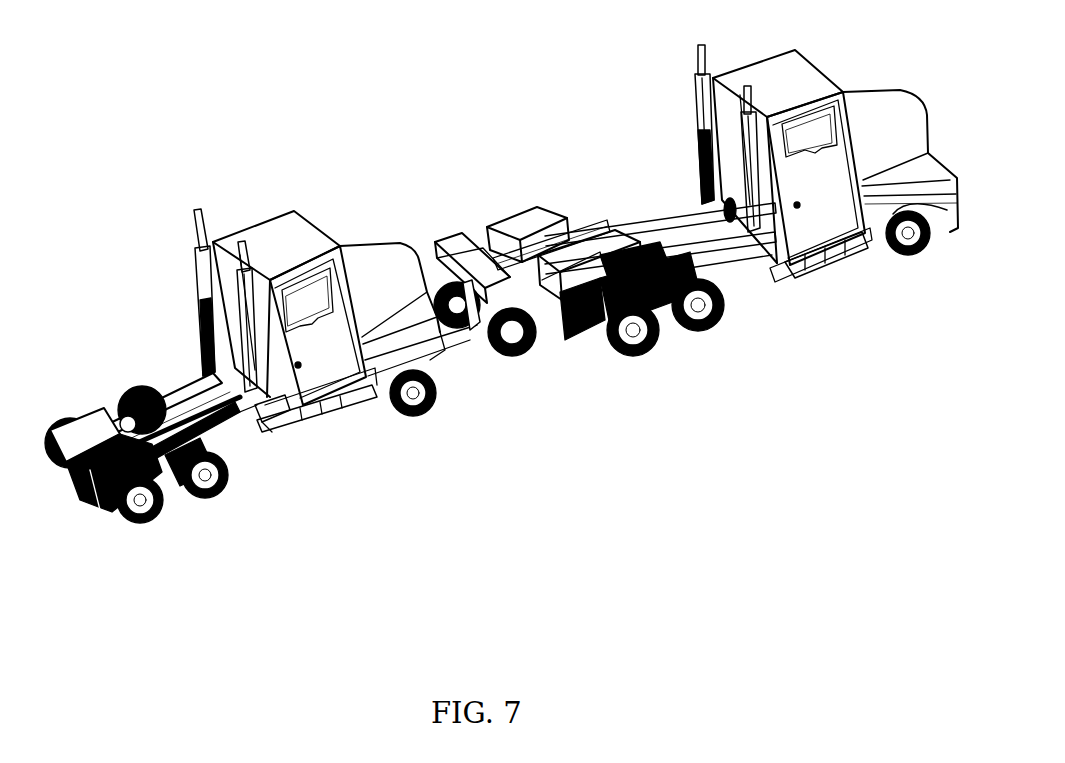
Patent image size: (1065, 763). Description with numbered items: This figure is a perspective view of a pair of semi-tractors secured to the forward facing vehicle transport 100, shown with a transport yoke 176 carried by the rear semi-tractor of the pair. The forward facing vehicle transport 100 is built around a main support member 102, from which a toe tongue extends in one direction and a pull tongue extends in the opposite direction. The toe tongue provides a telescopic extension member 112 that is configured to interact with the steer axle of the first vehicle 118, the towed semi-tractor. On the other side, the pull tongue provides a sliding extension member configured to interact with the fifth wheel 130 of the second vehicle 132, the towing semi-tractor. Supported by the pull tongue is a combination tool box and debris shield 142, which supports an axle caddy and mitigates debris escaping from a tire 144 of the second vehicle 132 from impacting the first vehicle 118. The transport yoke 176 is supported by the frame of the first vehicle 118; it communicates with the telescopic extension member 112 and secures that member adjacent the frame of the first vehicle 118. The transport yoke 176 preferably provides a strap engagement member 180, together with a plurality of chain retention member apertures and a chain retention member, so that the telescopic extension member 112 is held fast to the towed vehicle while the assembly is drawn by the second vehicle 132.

The forward facing vehicle transport 100 is at (466, 215).
The main support member 102 is at (470, 313).
The telescopic extension member 112 is at (273, 430).
The first vehicle 118 is at (287, 231).
The fifth wheel 130 is at (655, 245).
The second vehicle 132 is at (766, 76).
The combination tool box and debris shield 142 is at (552, 220).
The tire 144 is at (634, 350).
The transport yoke 176 is at (210, 372).
The strap engagement member 180 is at (236, 420).